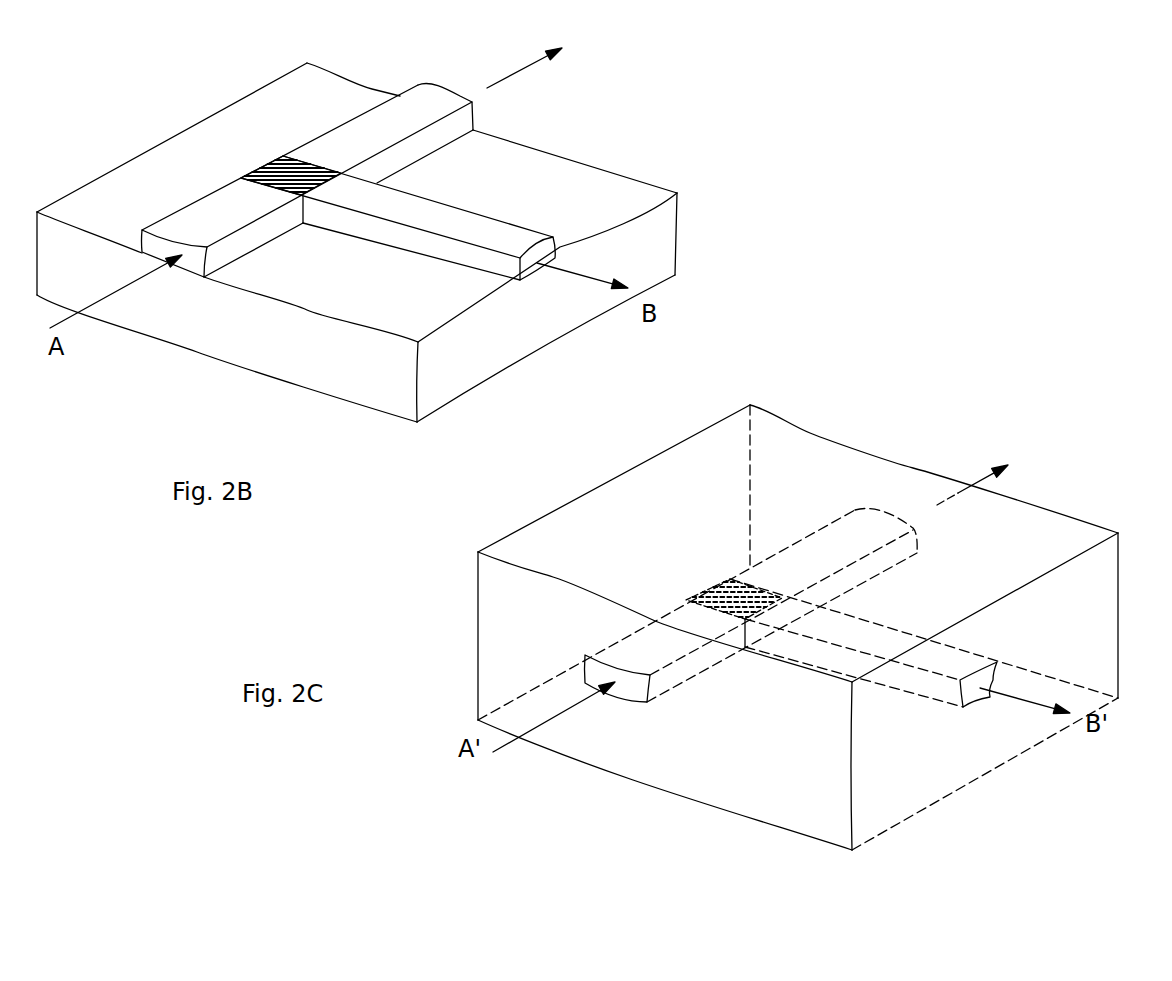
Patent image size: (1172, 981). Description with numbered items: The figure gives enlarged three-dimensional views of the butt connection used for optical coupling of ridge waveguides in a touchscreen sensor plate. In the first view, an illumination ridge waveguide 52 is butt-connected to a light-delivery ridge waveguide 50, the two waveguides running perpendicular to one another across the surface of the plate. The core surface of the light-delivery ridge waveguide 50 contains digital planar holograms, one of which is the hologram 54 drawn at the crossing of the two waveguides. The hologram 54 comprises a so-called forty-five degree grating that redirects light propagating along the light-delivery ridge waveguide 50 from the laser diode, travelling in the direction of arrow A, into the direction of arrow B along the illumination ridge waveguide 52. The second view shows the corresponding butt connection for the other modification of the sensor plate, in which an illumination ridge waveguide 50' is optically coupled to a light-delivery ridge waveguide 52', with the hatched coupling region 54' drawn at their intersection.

In FIG. 2B, the light-delivery ridge waveguide 50 is at (308, 142).
In FIG. 2B, the illumination ridge waveguide 52 is at (419, 194).
In FIG. 2B, the hologram 54 is at (286, 116).
In FIG. 2C, the illumination ridge waveguide 50' is at (697, 559).
In FIG. 2C, the light-delivery ridge waveguide 52' is at (930, 591).
In FIG. 2C, the buried waveguide crossing region 54' is at (664, 523).